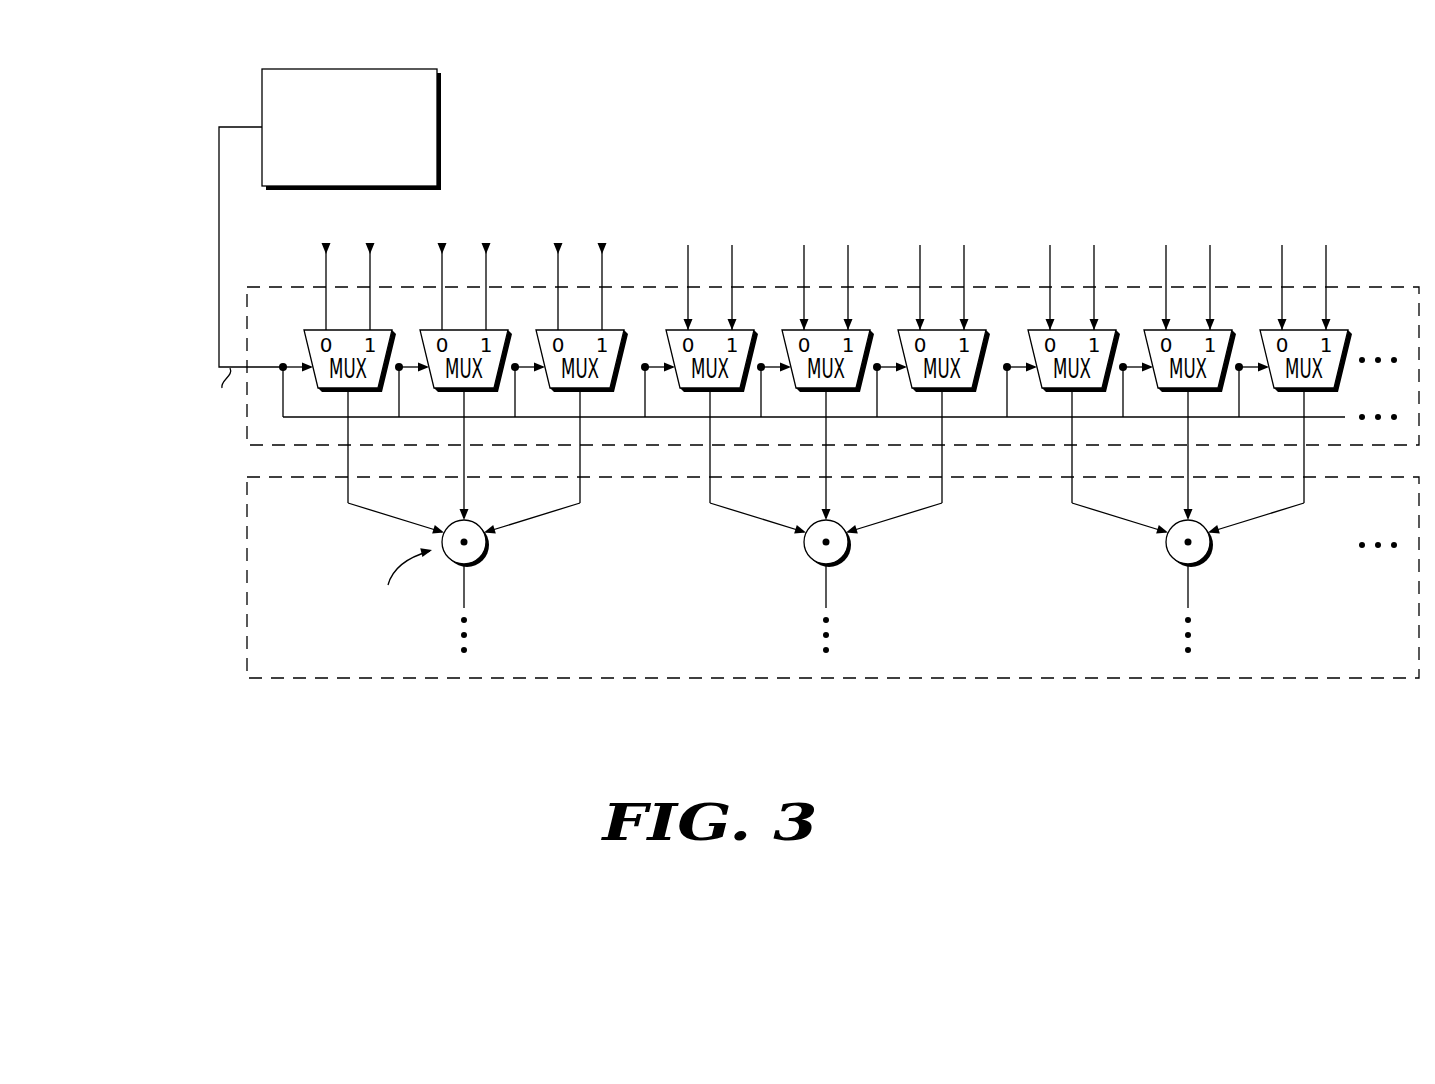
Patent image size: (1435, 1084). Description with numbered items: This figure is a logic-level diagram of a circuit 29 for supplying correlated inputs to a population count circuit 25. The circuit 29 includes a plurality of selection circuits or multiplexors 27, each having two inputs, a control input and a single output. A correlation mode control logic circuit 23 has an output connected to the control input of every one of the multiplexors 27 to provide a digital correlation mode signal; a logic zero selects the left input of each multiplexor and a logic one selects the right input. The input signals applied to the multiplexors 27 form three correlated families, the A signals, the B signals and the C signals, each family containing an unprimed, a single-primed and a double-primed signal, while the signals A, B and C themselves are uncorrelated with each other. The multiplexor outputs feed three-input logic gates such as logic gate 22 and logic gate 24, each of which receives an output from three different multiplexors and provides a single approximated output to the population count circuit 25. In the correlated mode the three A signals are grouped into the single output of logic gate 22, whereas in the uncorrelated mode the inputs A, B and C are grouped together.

The logic gate 22 is at (484, 555).
The correlation mode control logic circuit 23 is at (441, 108).
The logic gate 24 is at (846, 555).
The population count circuit 25 is at (1341, 679).
The multiplexors 27 is at (1397, 286).
The circuit 29 is at (1334, 126).